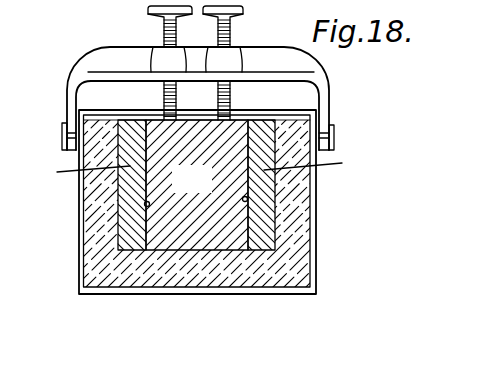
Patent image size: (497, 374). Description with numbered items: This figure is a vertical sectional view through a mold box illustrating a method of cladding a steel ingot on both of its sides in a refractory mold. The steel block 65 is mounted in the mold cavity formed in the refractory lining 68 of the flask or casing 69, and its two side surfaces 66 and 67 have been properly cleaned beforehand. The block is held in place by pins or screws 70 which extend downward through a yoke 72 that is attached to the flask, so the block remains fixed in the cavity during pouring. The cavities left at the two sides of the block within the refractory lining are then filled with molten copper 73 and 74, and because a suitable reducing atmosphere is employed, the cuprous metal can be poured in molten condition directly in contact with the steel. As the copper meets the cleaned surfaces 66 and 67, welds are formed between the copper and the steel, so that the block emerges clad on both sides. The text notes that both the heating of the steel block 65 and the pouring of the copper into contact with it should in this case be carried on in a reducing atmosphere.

The steel block 65 is at (193, 245).
The cleaned surface 66 is at (147, 206).
The cleaned surface 67 is at (248, 200).
The refractory lining 68 is at (297, 232).
The flask 69 is at (315, 272).
The pins or screws 70 is at (218, 32).
The yoke 72 is at (82, 60).
The molten copper 73 is at (133, 235).
The molten copper 74 is at (264, 247).